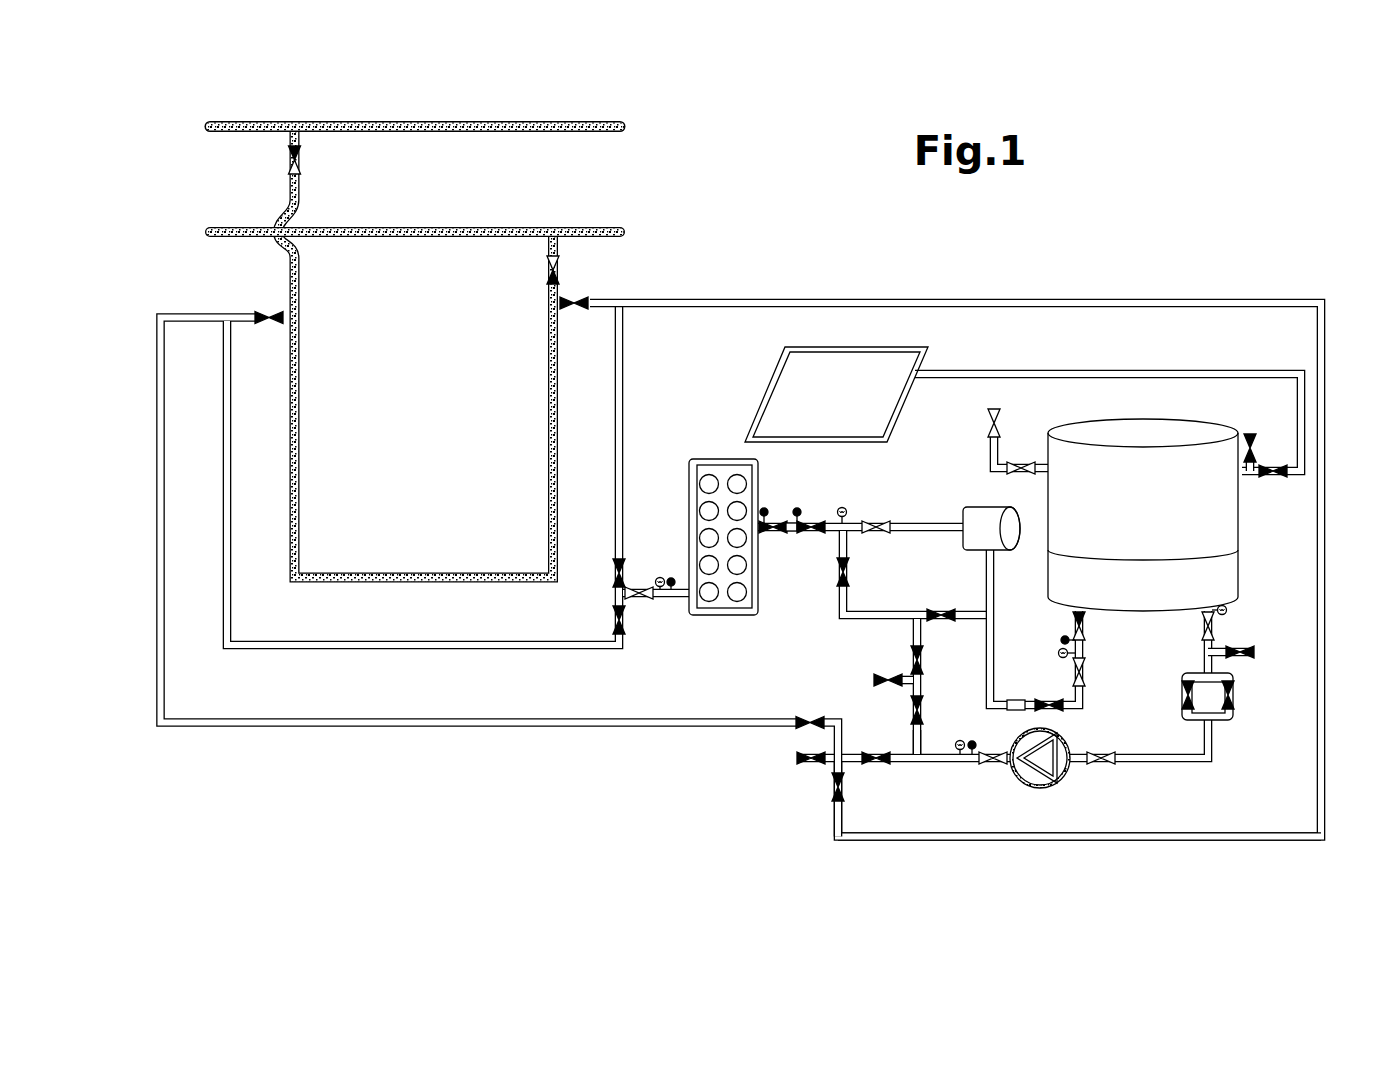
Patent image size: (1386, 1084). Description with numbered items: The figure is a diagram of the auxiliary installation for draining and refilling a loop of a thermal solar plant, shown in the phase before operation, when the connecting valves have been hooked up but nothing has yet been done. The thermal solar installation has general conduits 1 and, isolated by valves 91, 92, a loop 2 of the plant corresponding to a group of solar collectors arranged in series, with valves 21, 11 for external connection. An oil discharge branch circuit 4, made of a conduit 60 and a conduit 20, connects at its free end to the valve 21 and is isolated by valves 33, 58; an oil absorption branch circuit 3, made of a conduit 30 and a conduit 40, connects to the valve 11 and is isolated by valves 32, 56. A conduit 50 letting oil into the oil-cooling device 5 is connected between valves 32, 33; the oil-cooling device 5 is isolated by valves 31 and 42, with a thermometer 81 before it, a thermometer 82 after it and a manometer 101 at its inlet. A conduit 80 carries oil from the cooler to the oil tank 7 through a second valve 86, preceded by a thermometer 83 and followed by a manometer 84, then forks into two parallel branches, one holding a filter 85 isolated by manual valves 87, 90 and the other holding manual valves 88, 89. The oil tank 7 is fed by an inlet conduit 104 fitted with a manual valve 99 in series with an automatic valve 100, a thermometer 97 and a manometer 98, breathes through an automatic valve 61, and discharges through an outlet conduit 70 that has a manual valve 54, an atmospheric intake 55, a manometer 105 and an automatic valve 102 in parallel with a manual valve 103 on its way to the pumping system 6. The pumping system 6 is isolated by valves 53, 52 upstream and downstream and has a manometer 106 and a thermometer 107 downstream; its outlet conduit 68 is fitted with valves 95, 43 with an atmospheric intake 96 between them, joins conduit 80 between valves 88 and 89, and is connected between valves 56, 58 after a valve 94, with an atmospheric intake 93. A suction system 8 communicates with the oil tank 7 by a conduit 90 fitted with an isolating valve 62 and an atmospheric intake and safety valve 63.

The general conduits 1 is at (357, 168).
The loop of the plant 2 is at (403, 583).
The oil absorption branch circuit 3 is at (213, 692).
The oil discharge branch circuit 4 is at (1283, 818).
The oil-cooling device 5 is at (718, 616).
The pumping system 6 is at (1055, 782).
The oil tank 7 is at (1210, 525).
The depression or suction system 8 is at (831, 378).
The valve 11 is at (265, 314).
The conduit 20 is at (623, 402).
The valve 21 is at (583, 300).
The conduit 30 is at (297, 722).
The valve 31 is at (640, 600).
The valve 32 is at (612, 618).
The valve 33 is at (616, 568).
The conduit 40 is at (430, 645).
The valve 42 is at (775, 540).
The valve 43 is at (910, 658).
The conduit 50 is at (660, 598).
The valve 52 is at (990, 765).
The valve 53 is at (1105, 768).
The manual valve 54 is at (1215, 628).
The atmospheric intake 55 is at (1245, 650).
The valve 56 is at (805, 718).
The valve 58 is at (845, 790).
The conduit 60 is at (1177, 838).
The automatic valve 61 is at (998, 418).
The isolating valve 62 is at (1268, 475).
The valve 63 is at (1252, 437).
The conduit 68 is at (913, 738).
The outlet conduit 70 is at (1205, 665).
The conduit 80 is at (795, 533).
The thermometer 81 is at (671, 578).
The thermometer 82 is at (765, 508).
The thermometer 83 is at (797, 508).
The manometer 84 is at (843, 508).
The filter 85 is at (970, 545).
The second valve 86 is at (810, 540).
The manual valve 87 is at (878, 522).
The manual valve 88 is at (850, 572).
The manual valve 89 is at (945, 622).
The manual valve / conduit 90 is at (1100, 372).
The valve 91 is at (291, 160).
The valve 92 is at (560, 268).
The atmospheric intake 93 is at (800, 765).
The valve 94 is at (882, 765).
The valve 95 is at (905, 712).
The atmospheric intake 96 is at (880, 678).
The thermometer 97 is at (1062, 638).
The manometer 98 is at (1059, 653).
The manual valve 99 is at (1082, 670).
The automatic valve 100 is at (1052, 710).
The manometer 101 is at (660, 578).
The automatic valve 102 is at (1183, 697).
The manual valve 103 is at (1233, 700).
The inlet conduit 104 is at (1082, 698).
The manometer 105 is at (1227, 608).
The manometer 106 is at (960, 740).
The thermometer 107 is at (972, 740).